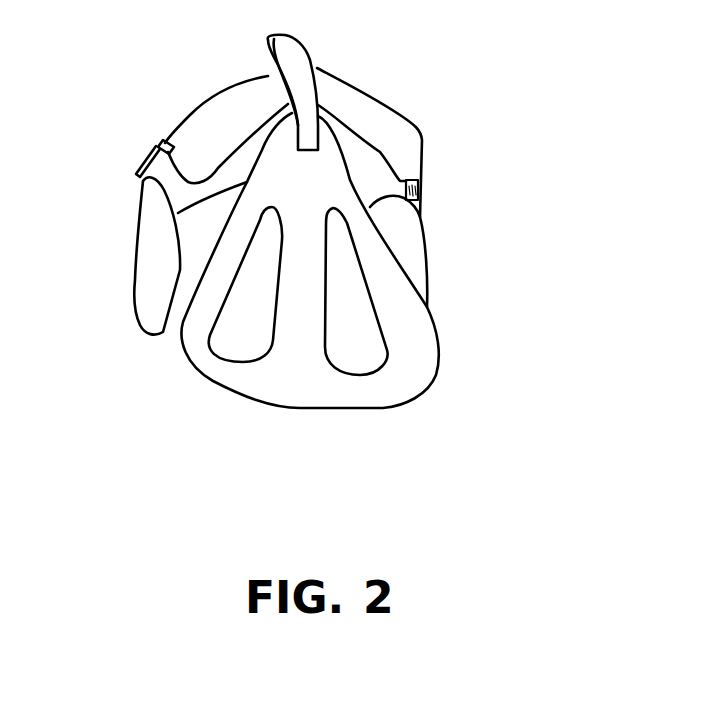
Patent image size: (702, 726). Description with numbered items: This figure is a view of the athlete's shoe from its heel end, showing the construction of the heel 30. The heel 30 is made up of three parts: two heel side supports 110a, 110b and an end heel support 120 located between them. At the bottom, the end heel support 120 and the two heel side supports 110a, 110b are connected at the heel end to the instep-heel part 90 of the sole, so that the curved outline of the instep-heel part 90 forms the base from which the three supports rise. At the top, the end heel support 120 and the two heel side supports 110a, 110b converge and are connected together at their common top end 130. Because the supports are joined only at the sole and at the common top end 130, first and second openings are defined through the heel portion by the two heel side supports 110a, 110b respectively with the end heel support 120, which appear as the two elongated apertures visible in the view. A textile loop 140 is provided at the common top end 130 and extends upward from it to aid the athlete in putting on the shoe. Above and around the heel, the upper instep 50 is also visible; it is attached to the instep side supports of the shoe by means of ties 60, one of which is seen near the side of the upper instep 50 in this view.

The heel 30 is at (467, 330).
The upper instep 50 is at (368, 108).
The ties 60 is at (418, 185).
The instep-heel part 90 is at (372, 395).
The heel side support 110a is at (402, 302).
The heel side support 110b is at (200, 307).
The end heel support 120 is at (302, 315).
The common top end 130 is at (310, 178).
The textile loop 140 is at (297, 58).